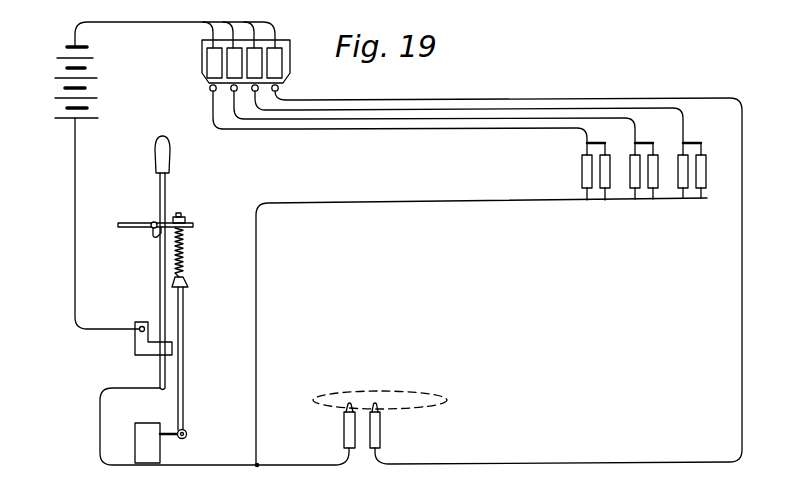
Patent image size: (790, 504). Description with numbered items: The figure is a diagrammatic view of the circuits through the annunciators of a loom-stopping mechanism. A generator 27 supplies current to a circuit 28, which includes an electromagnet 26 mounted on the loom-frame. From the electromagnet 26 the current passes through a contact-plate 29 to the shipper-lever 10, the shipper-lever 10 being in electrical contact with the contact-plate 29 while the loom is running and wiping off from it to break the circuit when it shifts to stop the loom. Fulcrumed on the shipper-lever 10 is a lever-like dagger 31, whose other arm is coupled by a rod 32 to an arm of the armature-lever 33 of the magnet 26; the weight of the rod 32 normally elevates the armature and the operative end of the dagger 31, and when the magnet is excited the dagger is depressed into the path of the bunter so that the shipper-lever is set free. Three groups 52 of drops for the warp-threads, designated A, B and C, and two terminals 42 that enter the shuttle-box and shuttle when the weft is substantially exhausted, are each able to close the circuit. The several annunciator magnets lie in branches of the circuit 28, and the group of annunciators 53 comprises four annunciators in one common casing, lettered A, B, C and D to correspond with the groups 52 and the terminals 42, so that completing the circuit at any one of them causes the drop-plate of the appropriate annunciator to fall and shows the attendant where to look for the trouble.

The shipper-lever 10 is at (160, 197).
The electromagnet 26 is at (153, 448).
The generator 27 is at (57, 88).
The circuit 28 is at (163, 22).
The contact-plate 29 is at (143, 346).
The dagger 31 is at (124, 223).
The rod 32 is at (186, 332).
The armature-lever 33 is at (178, 439).
The terminals 42 is at (381, 433).
The groups of drops 52 is at (582, 171).
The group of annunciators 53 is at (202, 71).